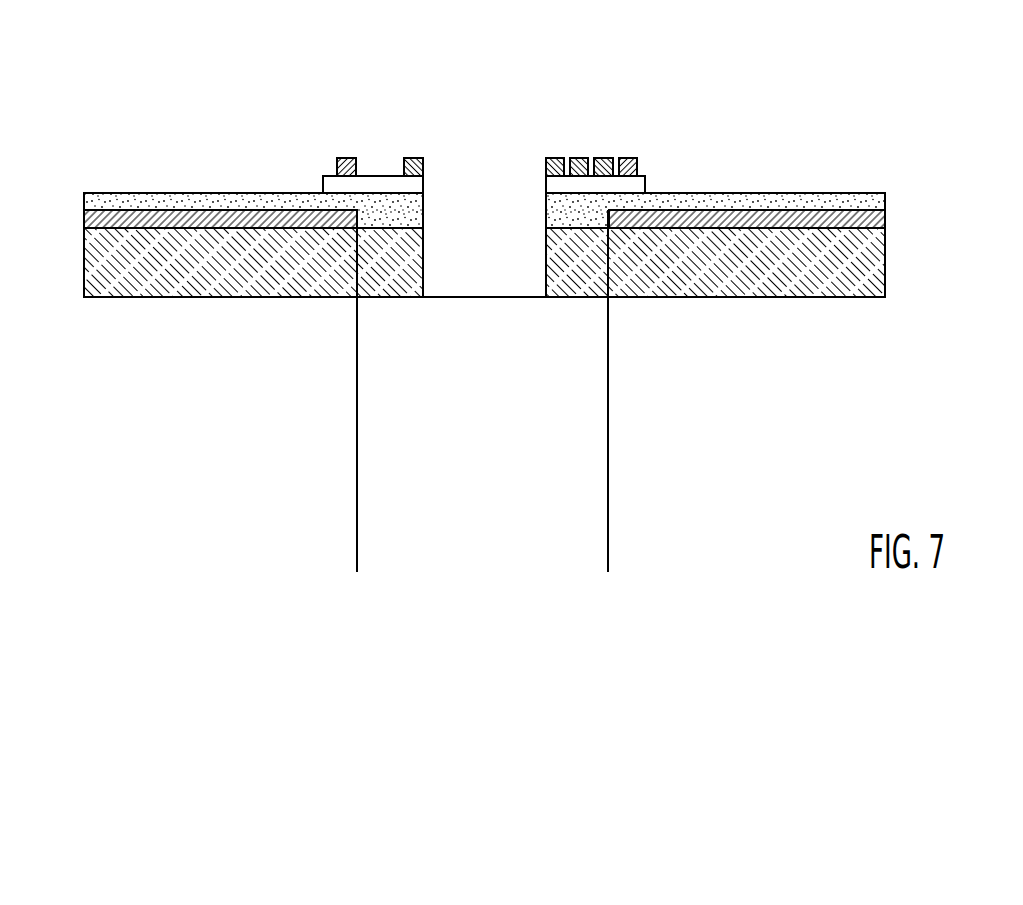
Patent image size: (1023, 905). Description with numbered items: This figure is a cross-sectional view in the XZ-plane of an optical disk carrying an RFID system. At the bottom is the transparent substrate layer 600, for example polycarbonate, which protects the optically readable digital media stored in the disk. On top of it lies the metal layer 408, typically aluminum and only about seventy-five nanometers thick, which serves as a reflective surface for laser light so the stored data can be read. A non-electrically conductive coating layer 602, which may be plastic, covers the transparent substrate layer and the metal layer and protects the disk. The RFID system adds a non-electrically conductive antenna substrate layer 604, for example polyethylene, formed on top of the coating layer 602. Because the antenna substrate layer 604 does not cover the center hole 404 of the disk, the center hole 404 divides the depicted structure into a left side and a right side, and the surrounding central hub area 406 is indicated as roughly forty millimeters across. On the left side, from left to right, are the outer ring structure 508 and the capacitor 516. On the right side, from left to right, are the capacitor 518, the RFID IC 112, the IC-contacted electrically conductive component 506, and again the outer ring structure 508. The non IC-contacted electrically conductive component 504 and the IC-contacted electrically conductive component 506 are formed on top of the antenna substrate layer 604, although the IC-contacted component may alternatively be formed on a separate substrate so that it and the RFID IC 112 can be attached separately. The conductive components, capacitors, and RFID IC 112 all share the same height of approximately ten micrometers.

The RFID IC 112 is at (578, 158).
The center hole 404 is at (490, 277).
The central hub area 406 is at (402, 527).
The metal layer 408 is at (84, 218).
The non IC-contacted electrically conductive component 504 is at (519, 113).
The IC-contacted electrically conductive component 506 is at (600, 158).
The outer ring structure 508 is at (337, 160).
The capacitor 516 is at (424, 168).
The capacitor 518 is at (550, 158).
The transparent substrate layer 600 is at (231, 297).
The coating layer 602 is at (100, 193).
The antenna substrate layer 604 is at (323, 185).